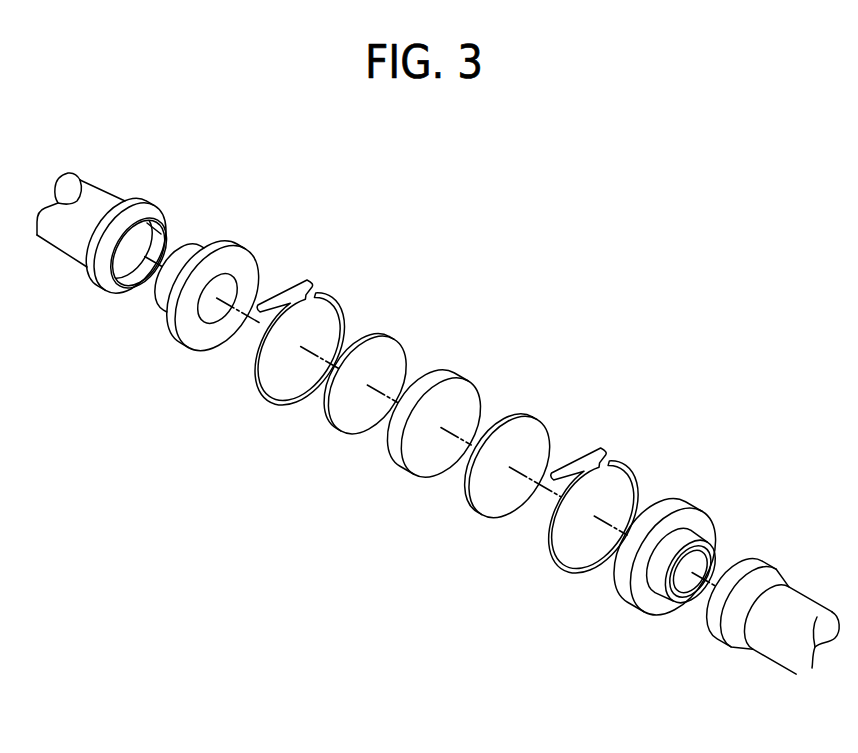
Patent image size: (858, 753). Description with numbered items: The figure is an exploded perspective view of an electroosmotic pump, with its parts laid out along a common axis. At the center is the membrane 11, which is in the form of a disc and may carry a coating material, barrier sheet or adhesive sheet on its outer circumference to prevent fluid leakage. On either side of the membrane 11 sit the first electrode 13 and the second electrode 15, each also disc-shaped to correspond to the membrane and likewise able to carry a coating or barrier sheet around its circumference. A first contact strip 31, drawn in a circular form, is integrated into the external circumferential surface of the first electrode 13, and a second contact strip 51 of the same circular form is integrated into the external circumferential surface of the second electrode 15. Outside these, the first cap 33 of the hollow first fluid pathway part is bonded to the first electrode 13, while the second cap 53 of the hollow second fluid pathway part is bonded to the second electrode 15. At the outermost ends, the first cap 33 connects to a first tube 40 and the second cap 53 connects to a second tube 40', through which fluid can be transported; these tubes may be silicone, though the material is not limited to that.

The first tube 40 is at (110, 231).
The first cap 33 is at (237, 262).
The first contact strip 31 is at (340, 307).
The first electrode 13 is at (393, 353).
The membrane 11 is at (460, 388).
The second electrode 15 is at (532, 427).
The second contact strip 51 is at (625, 463).
The second cap 53 is at (690, 519).
The second tube 40' is at (766, 610).